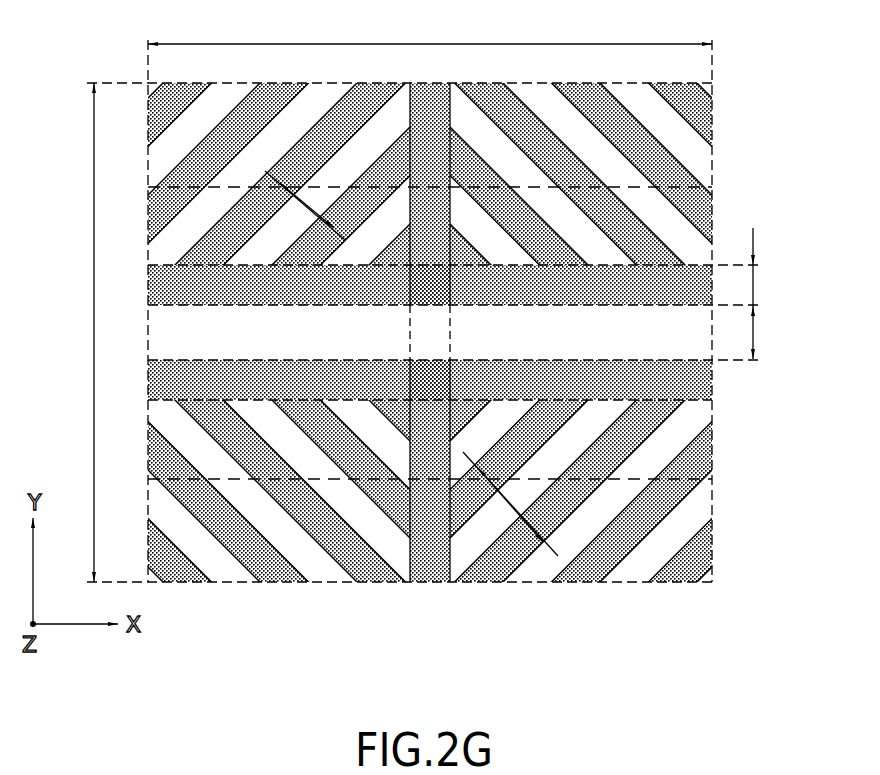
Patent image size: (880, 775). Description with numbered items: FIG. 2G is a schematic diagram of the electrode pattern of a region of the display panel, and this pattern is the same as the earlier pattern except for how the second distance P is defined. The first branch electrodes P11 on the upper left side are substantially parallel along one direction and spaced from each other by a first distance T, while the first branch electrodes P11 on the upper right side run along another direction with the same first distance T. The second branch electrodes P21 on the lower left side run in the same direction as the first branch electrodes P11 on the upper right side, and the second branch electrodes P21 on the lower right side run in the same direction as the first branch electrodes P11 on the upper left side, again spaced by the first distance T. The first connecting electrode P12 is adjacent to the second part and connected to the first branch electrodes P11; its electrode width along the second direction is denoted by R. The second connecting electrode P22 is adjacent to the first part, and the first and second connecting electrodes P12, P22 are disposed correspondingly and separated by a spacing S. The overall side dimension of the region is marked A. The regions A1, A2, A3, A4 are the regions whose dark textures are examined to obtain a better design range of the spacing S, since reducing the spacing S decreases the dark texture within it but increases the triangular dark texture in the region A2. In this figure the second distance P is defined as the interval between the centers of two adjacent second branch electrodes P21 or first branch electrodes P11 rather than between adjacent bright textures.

The region A1 is at (430, 332).
The region A2 is at (449, 320).
The region A3 is at (440, 387).
The region A4 is at (430, 332).
The first branch electrodes P11 is at (663, 162).
The first connecting electrode P12 is at (160, 281).
The second branch electrodes P21 is at (697, 460).
The second connecting electrode P22 is at (700, 383).
The side length A is at (390, 302).
The electrode width R is at (741, 267).
The spacing S is at (740, 332).
The first distance T is at (305, 205).
The second distance P is at (510, 504).